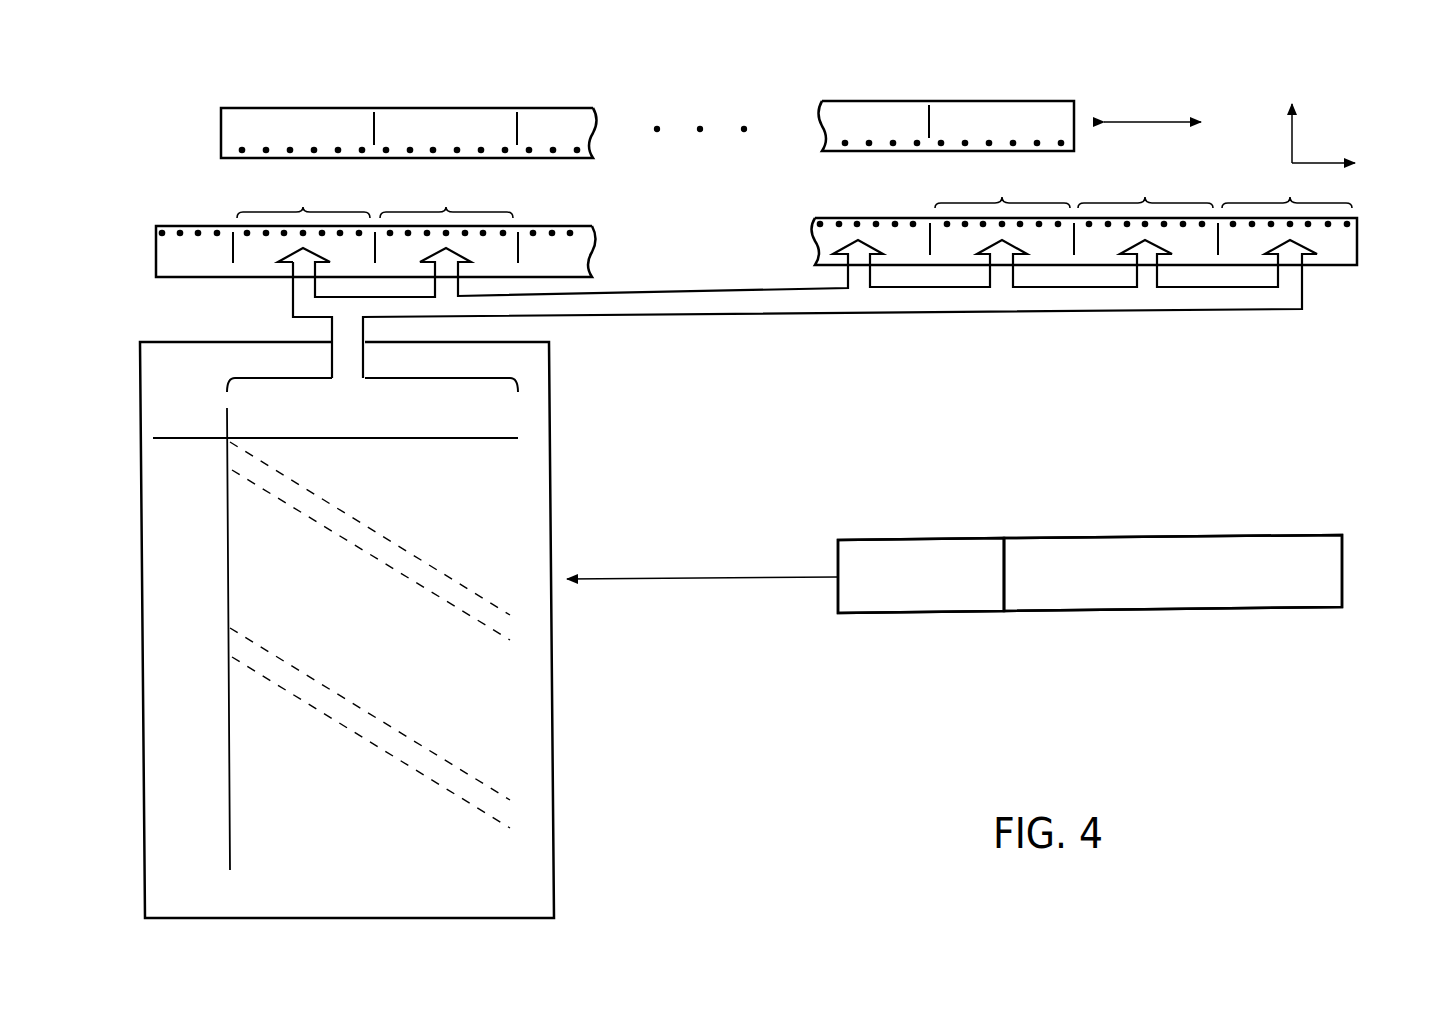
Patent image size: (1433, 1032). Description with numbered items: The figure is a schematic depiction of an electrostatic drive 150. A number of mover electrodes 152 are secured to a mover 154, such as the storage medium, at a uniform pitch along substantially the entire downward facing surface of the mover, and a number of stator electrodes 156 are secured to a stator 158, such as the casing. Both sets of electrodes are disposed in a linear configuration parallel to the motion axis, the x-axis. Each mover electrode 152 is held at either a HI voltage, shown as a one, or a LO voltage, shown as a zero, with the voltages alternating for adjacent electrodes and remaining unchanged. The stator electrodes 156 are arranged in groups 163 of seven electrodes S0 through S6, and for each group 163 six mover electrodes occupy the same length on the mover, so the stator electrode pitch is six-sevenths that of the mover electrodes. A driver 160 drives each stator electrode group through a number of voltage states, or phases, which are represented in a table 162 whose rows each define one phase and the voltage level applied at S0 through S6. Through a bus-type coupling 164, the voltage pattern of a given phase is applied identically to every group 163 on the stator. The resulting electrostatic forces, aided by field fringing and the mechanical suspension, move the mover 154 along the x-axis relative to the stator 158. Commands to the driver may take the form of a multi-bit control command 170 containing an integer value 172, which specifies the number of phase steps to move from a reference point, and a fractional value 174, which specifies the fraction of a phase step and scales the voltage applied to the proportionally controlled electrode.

The electrostatic drive 150 is at (1362, 713).
The mover electrodes 152 is at (267, 160).
The mover 154 is at (227, 122).
The stator electrodes 156 is at (198, 229).
The stator 158 is at (180, 277).
The driver 160 is at (555, 774).
The table 162 is at (505, 880).
The groups 163 is at (303, 207).
The bus-type coupling 164 is at (732, 307).
The control command 170 is at (1040, 520).
The integer value 172 is at (911, 600).
The fractional value 174 is at (1176, 598).